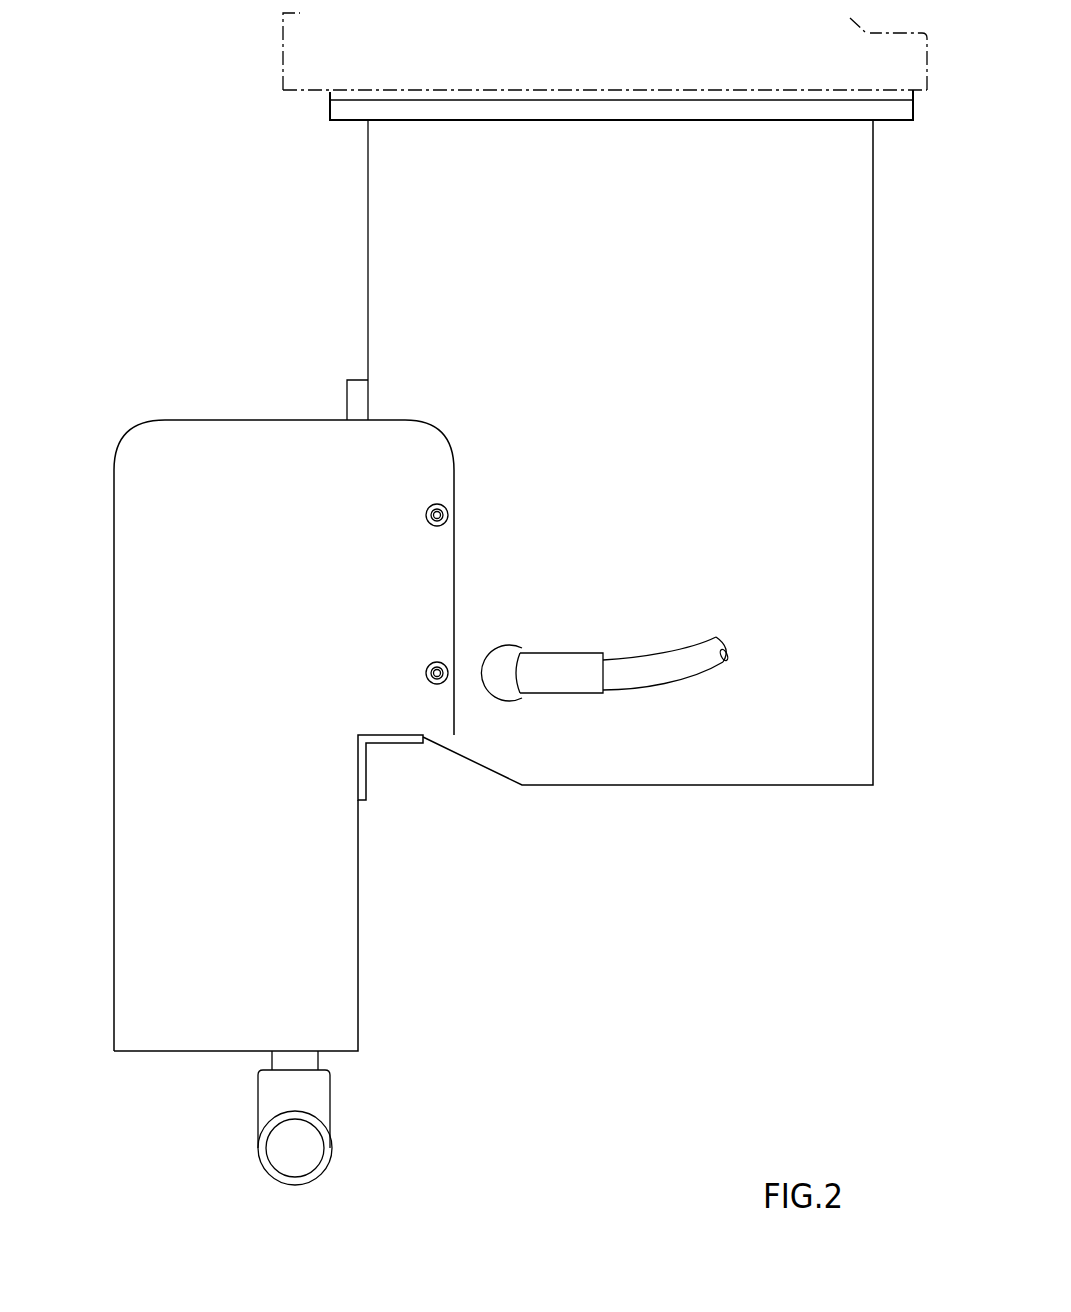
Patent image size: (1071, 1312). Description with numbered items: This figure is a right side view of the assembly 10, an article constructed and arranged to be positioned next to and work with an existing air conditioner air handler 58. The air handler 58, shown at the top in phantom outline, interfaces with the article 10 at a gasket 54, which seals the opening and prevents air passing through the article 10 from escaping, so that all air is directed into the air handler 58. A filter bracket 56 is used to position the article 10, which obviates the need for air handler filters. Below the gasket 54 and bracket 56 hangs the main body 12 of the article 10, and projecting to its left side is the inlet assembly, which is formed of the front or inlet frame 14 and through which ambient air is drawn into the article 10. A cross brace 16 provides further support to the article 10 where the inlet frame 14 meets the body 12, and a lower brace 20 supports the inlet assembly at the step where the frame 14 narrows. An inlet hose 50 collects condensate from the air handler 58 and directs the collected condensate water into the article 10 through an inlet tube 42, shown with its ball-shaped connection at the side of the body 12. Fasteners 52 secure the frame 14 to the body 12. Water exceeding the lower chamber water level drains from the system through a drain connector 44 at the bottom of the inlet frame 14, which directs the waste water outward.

The assembly 10 is at (93, 63).
The main housing 12 is at (368, 225).
The front frame 14 is at (228, 420).
The cross brace 16 is at (345, 390).
The lower brace 20 is at (367, 772).
The inlet tube 42 is at (510, 702).
The drain connector 44 is at (332, 1148).
The inlet hose 50 is at (630, 690).
The screw 52 is at (430, 688).
The gasket 54 is at (330, 96).
The filter bracket 56 is at (342, 121).
The air handler 58 is at (282, 67).